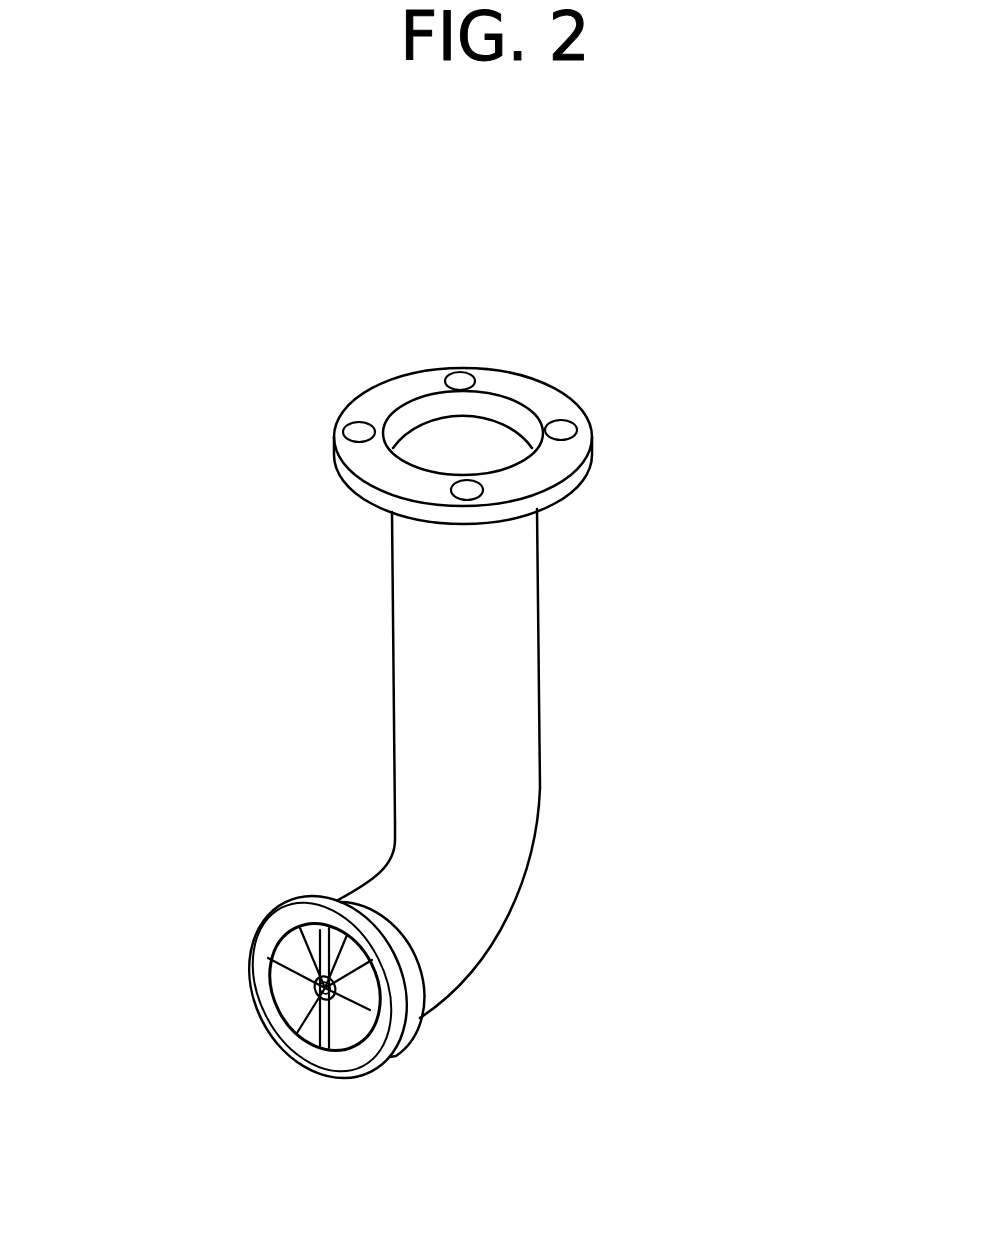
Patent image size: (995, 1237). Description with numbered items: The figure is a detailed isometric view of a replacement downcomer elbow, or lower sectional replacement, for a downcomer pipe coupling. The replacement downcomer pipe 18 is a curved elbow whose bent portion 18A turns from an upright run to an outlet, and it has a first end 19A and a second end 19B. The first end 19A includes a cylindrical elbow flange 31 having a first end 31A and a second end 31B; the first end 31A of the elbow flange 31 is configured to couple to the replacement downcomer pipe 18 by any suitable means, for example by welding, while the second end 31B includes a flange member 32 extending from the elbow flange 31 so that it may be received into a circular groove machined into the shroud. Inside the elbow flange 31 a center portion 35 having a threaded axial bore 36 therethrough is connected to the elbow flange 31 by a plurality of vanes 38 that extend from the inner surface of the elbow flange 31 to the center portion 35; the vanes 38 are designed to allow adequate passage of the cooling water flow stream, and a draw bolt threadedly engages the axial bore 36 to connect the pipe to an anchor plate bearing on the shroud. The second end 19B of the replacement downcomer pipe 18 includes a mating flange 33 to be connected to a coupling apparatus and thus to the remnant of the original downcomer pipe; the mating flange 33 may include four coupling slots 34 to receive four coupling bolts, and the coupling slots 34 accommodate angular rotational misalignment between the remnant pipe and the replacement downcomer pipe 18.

The replacement downcomer pipe 18 is at (525, 763).
The bent portion of pipe 18A is at (490, 872).
The first end 19A is at (281, 932).
The second end 19B is at (481, 395).
The elbow flange 31 is at (278, 932).
The first end of elbow flange 31A is at (390, 916).
The second end of elbow flange 31B is at (257, 992).
The flange member 32 is at (250, 957).
The mating flange 33 is at (427, 370).
The coupling slots 34 is at (353, 428).
The center portion 35 is at (295, 1042).
The threaded axial bore 36 is at (333, 1077).
The vanes 38 is at (267, 1027).